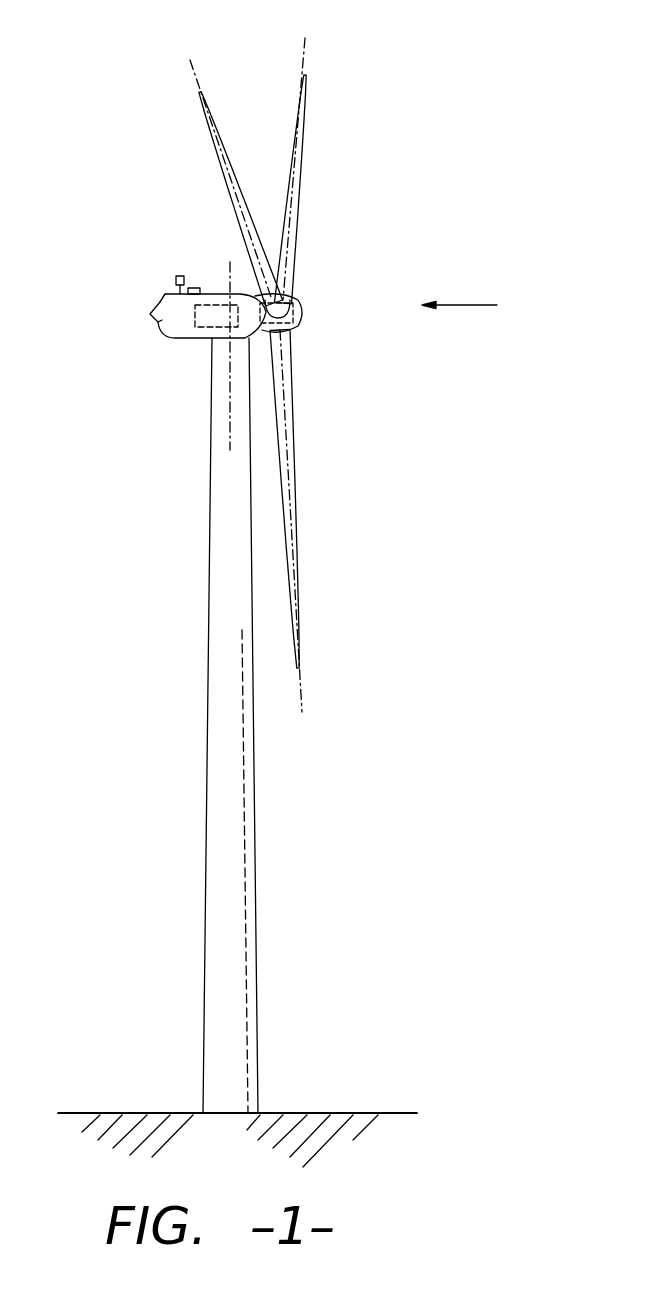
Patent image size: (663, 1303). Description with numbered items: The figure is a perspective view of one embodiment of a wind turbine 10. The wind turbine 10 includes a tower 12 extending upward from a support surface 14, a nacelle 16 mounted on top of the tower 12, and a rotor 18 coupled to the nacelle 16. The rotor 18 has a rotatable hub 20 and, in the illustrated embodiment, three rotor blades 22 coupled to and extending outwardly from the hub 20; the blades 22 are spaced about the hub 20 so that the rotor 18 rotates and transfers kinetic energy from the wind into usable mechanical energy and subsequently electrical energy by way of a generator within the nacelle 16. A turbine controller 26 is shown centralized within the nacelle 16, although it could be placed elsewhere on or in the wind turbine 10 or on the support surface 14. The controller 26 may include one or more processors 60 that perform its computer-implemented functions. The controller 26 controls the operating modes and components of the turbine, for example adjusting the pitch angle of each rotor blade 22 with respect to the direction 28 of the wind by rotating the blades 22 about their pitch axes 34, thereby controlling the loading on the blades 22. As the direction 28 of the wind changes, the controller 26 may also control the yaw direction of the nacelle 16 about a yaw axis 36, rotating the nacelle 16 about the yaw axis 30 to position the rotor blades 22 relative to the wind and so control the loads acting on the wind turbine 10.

The wind turbine 10 is at (298, 590).
The tower 12 is at (218, 832).
The support surface 14 is at (137, 1112).
The nacelle 16 is at (188, 340).
The rotor 18 is at (307, 290).
The rotatable hub 20 is at (298, 320).
The rotor blade 22 is at (233, 172).
The turbine controller 26 is at (212, 300).
The direction of the wind 28 is at (470, 305).
The yaw axis 30 is at (298, 305).
The pitch axis 34 is at (193, 80).
The yaw axis 36 is at (230, 393).
The processor 60 is at (178, 287).